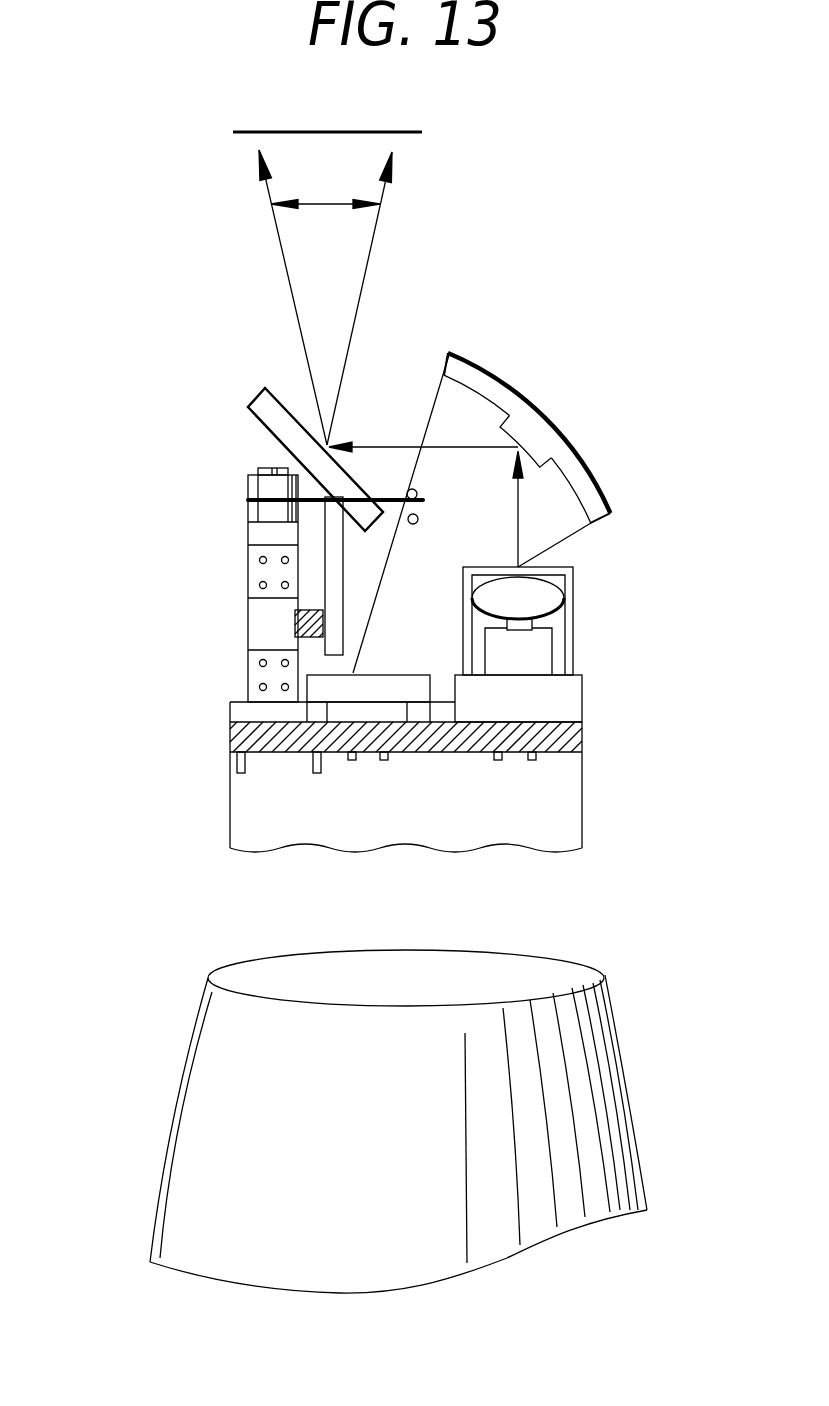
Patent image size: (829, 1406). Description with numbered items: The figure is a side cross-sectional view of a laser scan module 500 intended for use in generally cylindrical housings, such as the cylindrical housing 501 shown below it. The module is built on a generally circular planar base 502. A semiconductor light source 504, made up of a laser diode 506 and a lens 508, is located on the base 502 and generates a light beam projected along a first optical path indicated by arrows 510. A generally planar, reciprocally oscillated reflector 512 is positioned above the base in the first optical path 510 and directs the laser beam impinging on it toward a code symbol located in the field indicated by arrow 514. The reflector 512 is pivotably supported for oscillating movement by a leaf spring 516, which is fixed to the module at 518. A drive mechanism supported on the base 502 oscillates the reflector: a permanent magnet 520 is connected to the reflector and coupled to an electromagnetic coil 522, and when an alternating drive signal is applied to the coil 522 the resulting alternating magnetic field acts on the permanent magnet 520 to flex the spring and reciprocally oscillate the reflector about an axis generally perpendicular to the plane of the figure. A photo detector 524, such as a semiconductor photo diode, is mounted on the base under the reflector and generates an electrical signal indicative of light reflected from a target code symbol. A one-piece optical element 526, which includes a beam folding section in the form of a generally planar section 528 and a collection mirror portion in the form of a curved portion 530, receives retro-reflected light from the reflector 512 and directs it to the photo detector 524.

The laser scan module 500 is at (605, 708).
The cylindrical housing 501 is at (172, 1137).
The base 502 is at (582, 740).
The semiconductor light source 504 is at (575, 640).
The laser diode 506 is at (552, 690).
The lens 508 is at (552, 598).
The first optical path 510 is at (367, 283).
The reflector 512 is at (285, 425).
The field arrow 514 is at (330, 203).
The leaf spring 516 is at (302, 503).
The fixing point 518 is at (248, 482).
The permanent magnet 520 is at (295, 619).
The electromagnetic coil 522 is at (259, 687).
The photo detector 524 is at (390, 710).
The one-piece optical element 526 is at (592, 478).
The generally planar section 528 is at (527, 440).
The curved portion 530 is at (480, 383).